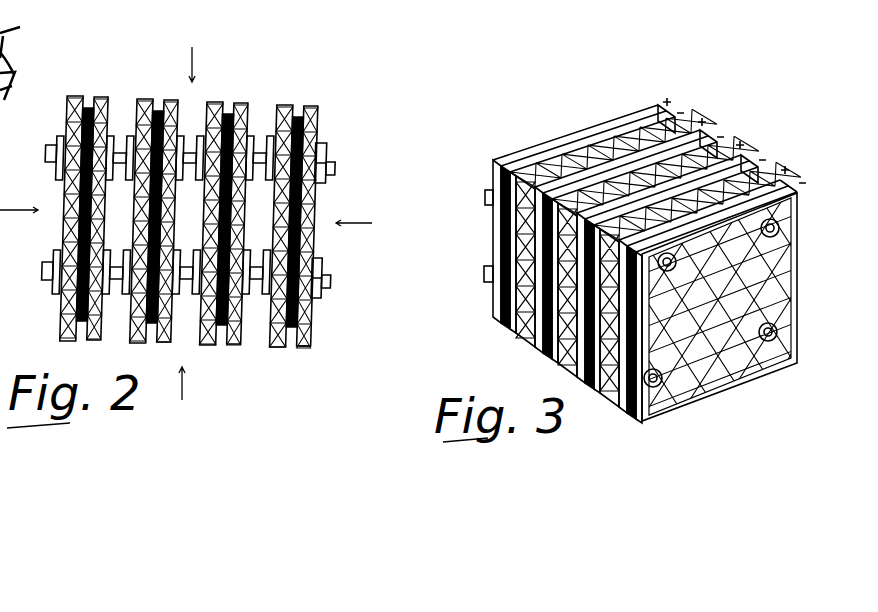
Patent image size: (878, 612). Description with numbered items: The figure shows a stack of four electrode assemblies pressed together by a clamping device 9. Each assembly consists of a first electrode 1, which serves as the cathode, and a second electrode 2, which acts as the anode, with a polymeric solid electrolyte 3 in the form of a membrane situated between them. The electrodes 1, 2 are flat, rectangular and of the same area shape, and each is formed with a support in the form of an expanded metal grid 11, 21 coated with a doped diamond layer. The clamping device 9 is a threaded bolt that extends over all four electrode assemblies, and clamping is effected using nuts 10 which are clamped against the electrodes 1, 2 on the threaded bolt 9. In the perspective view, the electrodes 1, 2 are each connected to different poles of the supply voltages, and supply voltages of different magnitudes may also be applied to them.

In FIG. 2, the first electrode 1 is at (318, 92).
In FIG. 3, the first electrode 1 is at (553, 162).
In FIG. 2, the second electrode 2 is at (286, 92).
In FIG. 3, the second electrode 2 is at (527, 150).
In FIG. 2, the polymeric solid electrolyte 3 is at (304, 95).
In FIG. 3, the polymeric solid electrolyte 3 is at (488, 237).
In FIG. 2, the clamping device 9 is at (348, 147).
In FIG. 2, the nuts 10 is at (327, 183).
In FIG. 3, the nuts 10 is at (800, 222).
In FIG. 2, the expanded metal grid 11 is at (384, 366).
In FIG. 2, the expanded metal grid 21 is at (275, 313).